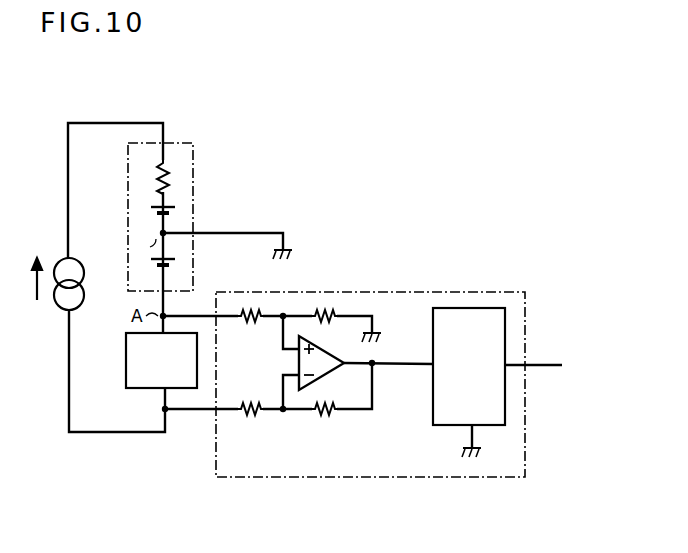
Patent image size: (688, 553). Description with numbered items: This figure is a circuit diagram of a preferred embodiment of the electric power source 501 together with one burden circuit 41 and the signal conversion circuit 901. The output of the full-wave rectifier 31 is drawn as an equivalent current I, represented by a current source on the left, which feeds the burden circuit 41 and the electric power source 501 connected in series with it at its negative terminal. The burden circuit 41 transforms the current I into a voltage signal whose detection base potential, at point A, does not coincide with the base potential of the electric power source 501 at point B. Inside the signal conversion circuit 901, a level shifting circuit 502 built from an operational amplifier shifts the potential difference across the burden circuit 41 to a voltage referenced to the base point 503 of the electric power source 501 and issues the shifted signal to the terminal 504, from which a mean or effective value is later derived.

The full-wave rectifier 31 is at (64, 311).
The burden circuit 41 is at (145, 392).
The electric power source 501 is at (190, 150).
The level shifting circuit 502 is at (298, 315).
The base point 503 is at (235, 231).
The terminal 504 is at (400, 367).
The signal conversion circuit 901 is at (462, 291).